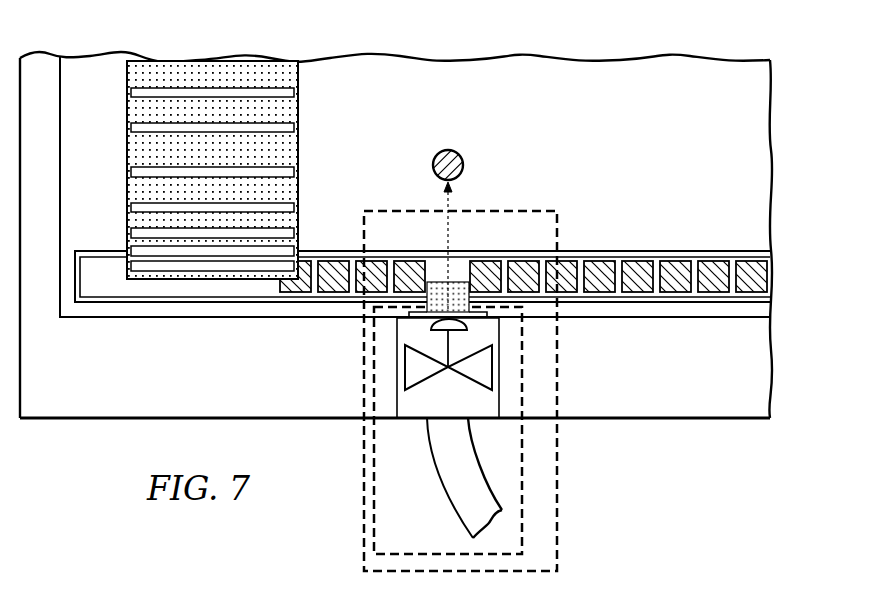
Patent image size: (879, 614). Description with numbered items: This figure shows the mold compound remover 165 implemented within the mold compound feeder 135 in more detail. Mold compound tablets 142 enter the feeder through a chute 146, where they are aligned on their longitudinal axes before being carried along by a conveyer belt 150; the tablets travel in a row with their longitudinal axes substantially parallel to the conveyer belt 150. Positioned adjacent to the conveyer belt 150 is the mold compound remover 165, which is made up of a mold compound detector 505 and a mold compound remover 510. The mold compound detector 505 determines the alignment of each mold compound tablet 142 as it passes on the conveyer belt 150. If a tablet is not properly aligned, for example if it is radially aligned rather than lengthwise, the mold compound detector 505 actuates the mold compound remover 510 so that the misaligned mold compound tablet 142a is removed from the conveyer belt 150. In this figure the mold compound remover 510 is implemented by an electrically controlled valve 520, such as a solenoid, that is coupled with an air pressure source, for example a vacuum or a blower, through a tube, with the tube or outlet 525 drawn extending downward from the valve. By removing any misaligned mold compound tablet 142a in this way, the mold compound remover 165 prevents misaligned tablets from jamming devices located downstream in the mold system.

The mold compound feeder 135 is at (613, 58).
The mold compound tablets 142 is at (763, 273).
The misaligned mold compound tablet 142a is at (455, 150).
The chute 146 is at (298, 150).
The conveyer belt 150 is at (685, 251).
The mold compound remover 165 is at (557, 465).
The mold compound detector 505 is at (453, 283).
The mold compound remover 510 is at (557, 367).
The electrically controlled valve 520 is at (397, 368).
The outlet conduit 525 is at (443, 505).